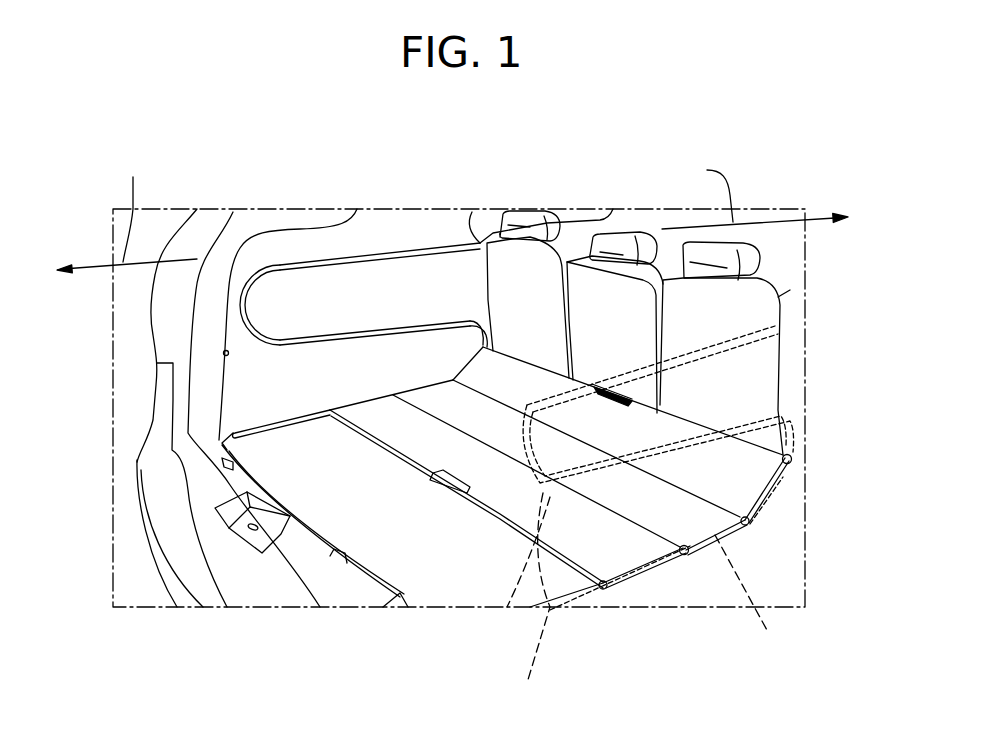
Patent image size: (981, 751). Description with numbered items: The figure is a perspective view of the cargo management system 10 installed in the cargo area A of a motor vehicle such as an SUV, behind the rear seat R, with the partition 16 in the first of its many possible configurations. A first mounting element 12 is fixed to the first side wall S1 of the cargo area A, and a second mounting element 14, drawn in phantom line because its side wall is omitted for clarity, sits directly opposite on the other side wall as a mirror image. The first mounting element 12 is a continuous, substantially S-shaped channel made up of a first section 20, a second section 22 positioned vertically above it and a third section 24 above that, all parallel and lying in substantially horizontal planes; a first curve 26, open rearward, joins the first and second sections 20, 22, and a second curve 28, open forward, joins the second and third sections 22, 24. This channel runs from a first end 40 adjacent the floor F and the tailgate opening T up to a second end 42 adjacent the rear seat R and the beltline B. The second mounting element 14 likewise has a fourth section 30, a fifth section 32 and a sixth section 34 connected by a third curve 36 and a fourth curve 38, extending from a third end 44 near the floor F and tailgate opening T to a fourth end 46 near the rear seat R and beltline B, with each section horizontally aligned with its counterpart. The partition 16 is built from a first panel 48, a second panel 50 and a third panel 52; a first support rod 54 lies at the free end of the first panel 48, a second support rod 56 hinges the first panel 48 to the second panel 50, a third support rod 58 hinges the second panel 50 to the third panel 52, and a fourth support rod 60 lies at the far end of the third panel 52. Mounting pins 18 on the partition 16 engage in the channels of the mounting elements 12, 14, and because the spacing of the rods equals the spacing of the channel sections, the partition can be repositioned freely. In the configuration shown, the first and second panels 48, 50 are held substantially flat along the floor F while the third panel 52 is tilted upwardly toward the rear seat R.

The cargo management system 10 is at (277, 150).
The first mounting element 12 is at (257, 333).
The second mounting element 14 is at (507, 607).
The partition 16 is at (704, 566).
The mounting pins 18 is at (612, 588).
The first section 20 is at (293, 412).
The second section 22 is at (357, 332).
The third section 24 is at (420, 256).
The first curve 26 is at (480, 338).
The second curve 28 is at (243, 313).
The fourth section 30 is at (768, 636).
The fifth section 32 is at (683, 437).
The sixth section 34 is at (671, 357).
The third curve 36 is at (789, 452).
The fourth curve 38 is at (492, 516).
The first end 40 is at (233, 433).
The second end 42 is at (480, 243).
The third end 44 is at (530, 604).
The fourth end 46 is at (777, 328).
The first panel 48 is at (417, 440).
The second panel 50 is at (480, 422).
The third panel 52 is at (518, 392).
The first support rod 54 is at (383, 447).
The second support rod 56 is at (622, 524).
The third support rod 58 is at (686, 490).
The fourth support rod 60 is at (512, 353).
The beltline B is at (452, 211).
The rear seat R is at (500, 290).
The first side wall S1 is at (267, 398).
The floor F is at (375, 516).
The tailgate opening T is at (223, 485).
The cargo area A is at (386, 568).